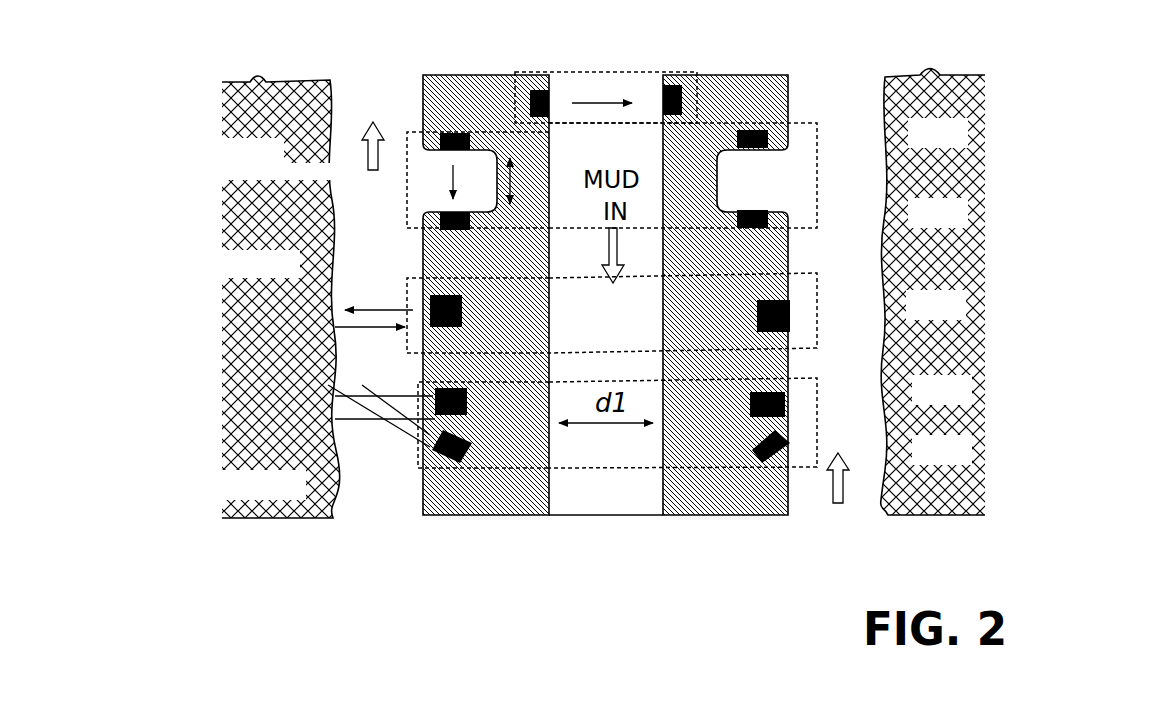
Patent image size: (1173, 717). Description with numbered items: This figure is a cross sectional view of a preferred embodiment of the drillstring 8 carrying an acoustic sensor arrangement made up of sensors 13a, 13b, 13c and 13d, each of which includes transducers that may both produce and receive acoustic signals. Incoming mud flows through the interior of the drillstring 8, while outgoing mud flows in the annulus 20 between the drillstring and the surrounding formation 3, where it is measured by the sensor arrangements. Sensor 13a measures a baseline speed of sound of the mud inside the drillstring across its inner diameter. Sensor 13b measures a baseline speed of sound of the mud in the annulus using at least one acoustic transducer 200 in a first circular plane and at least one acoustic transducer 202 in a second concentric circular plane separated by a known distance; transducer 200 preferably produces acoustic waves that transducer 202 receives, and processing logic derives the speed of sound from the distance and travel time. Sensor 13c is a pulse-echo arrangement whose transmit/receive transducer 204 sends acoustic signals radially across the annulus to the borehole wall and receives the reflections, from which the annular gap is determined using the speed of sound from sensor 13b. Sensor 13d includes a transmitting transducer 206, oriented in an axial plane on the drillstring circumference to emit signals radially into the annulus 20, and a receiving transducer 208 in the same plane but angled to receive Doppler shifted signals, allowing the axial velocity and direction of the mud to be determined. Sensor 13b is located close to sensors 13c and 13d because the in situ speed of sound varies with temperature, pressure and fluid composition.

The formation 3 is at (938, 77).
The drillstring 8 is at (708, 72).
The annulus 20 is at (833, 80).
The sensor 13a is at (512, 88).
The sensor 13b is at (407, 183).
The sensor 13c is at (407, 285).
The sensor 13d is at (418, 469).
The acoustic transducer 200 is at (767, 145).
The acoustic transducer 202 is at (767, 225).
The transmit/receive transducer 204 is at (790, 315).
The transmitting transducer 206 is at (785, 402).
The receiving transducer 208 is at (788, 447).